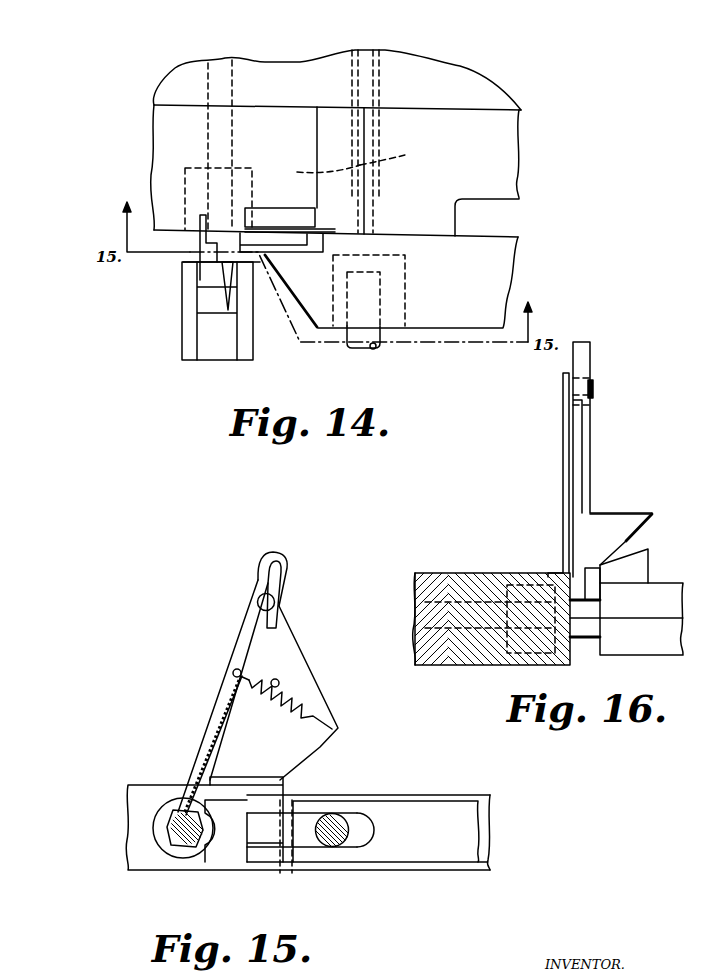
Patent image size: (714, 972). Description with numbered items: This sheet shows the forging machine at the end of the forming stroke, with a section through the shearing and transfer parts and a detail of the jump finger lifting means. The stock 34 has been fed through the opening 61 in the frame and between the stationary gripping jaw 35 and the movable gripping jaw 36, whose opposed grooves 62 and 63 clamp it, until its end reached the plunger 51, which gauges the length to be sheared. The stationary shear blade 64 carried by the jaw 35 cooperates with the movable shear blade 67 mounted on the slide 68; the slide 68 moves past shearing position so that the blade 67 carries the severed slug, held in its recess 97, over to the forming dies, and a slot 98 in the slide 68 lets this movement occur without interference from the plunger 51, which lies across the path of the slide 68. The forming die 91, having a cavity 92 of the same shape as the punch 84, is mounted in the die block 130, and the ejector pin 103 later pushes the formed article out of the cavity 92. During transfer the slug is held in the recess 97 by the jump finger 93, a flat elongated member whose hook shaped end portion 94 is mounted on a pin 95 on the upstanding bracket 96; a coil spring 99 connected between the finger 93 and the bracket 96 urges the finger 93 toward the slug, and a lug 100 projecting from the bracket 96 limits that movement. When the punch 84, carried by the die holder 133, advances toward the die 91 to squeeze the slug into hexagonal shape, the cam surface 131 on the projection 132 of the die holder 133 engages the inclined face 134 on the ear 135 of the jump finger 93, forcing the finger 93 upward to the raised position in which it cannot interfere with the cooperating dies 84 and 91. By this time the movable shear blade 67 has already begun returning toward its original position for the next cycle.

In FIG. 14, the stock 34 is at (365, 52).
In FIG. 14, the stationary gripping jaw 35 is at (320, 131).
In FIG. 15, the stationary gripping jaw 35 is at (310, 793).
In FIG. 14, the movable gripping jaw 36 is at (453, 122).
In FIG. 15, the movable gripping jaw 36 is at (353, 795).
In FIG. 14, the plunger 51 is at (375, 350).
In FIG. 15, the plunger 51 is at (323, 847).
In FIG. 14, the opening 61 is at (382, 88).
In FIG. 14, the groove 62 is at (312, 170).
In FIG. 14, the groove 63 is at (388, 158).
In FIG. 14, the stationary shear blade 64 is at (345, 230).
In FIG. 14, the movable shear blade 67 is at (317, 255).
In FIG. 15, the movable shear blade 67 is at (265, 840).
In FIG. 14, the slide 68 is at (493, 270).
In FIG. 15, the slide 68 is at (443, 820).
In FIG. 14, the punch 84 is at (198, 246).
In FIG. 16, the punch 84 is at (580, 633).
In FIG. 14, the forming die 91 is at (187, 172).
In FIG. 16, the forming die 91 is at (512, 648).
In FIG. 15, the forming die 91 is at (168, 804).
In FIG. 14, the cavity 92 is at (200, 230).
In FIG. 15, the cavity 92 is at (170, 842).
In FIG. 14, the jump finger 93 is at (260, 263).
In FIG. 16, the jump finger 93 is at (582, 425).
In FIG. 15, the jump finger 93 is at (247, 615).
In FIG. 15, the hook shaped end portion 94 is at (287, 573).
In FIG. 16, the pin 95 is at (595, 383).
In FIG. 15, the pin 95 is at (262, 593).
In FIG. 16, the upstanding bracket 96 is at (563, 448).
In FIG. 15, the upstanding bracket 96 is at (252, 655).
In FIG. 15, the recess 97 is at (215, 862).
In FIG. 15, the slot 98 is at (360, 812).
In FIG. 15, the coil spring 99 is at (310, 707).
In FIG. 15, the lug 100 is at (278, 682).
In FIG. 14, the ejector pin 103 is at (220, 67).
In FIG. 14, the die block 130 is at (167, 122).
In FIG. 16, the die block 130 is at (477, 592).
In FIG. 15, the die block 130 is at (140, 817).
In FIG. 14, the cam surface 131 is at (217, 282).
In FIG. 16, the cam surface 131 is at (628, 543).
In FIG. 14, the projection 132 is at (214, 303).
In FIG. 16, the projection 132 is at (640, 558).
In FIG. 14, the die holder 133 is at (210, 352).
In FIG. 16, the die holder 133 is at (655, 592).
In FIG. 16, the inclined face 134 is at (652, 518).
In FIG. 14, the ear 135 is at (222, 268).
In FIG. 16, the ear 135 is at (600, 518).